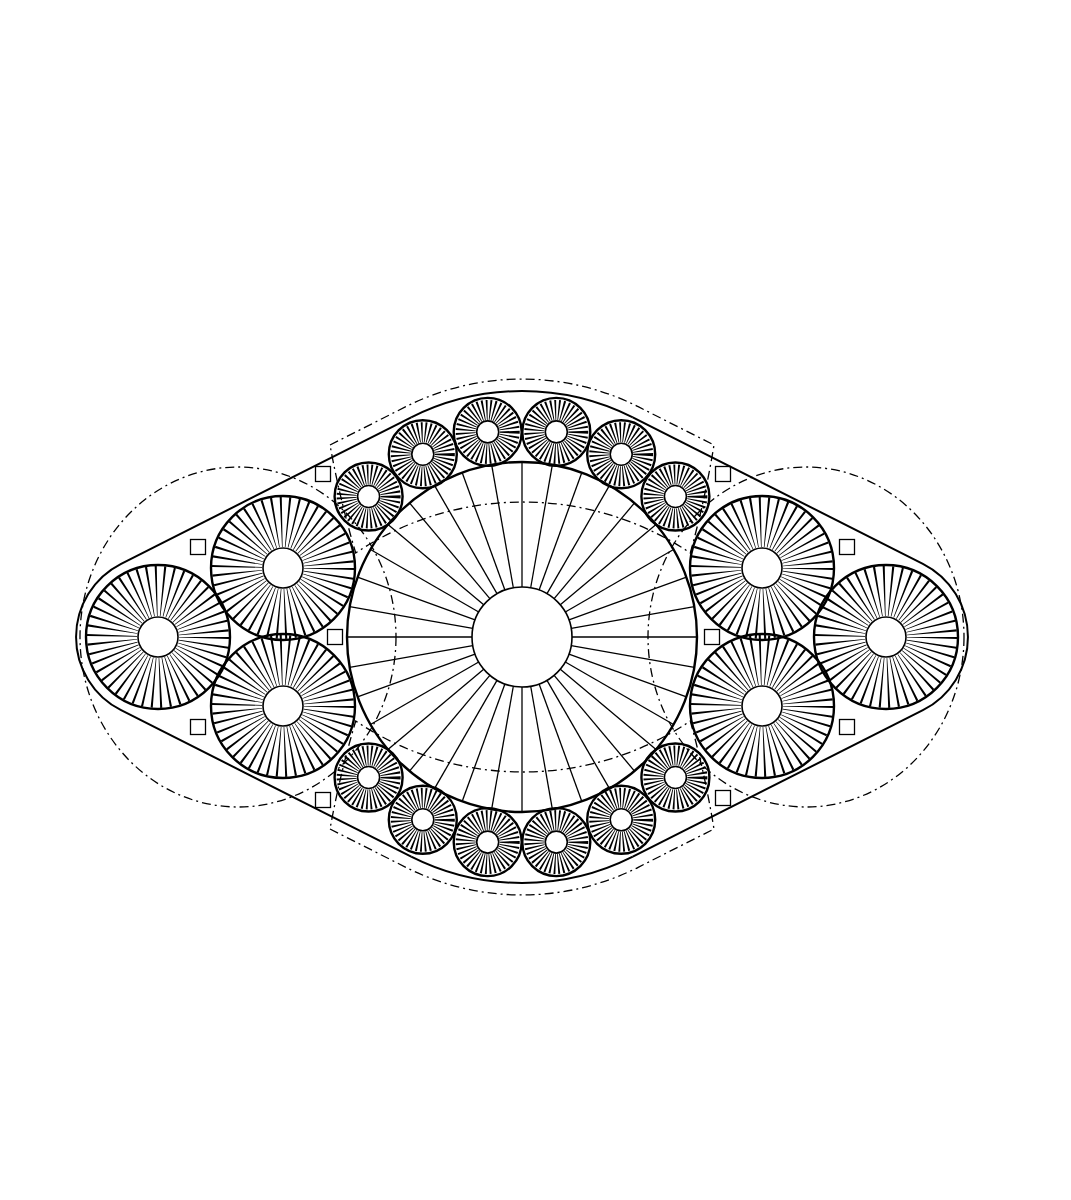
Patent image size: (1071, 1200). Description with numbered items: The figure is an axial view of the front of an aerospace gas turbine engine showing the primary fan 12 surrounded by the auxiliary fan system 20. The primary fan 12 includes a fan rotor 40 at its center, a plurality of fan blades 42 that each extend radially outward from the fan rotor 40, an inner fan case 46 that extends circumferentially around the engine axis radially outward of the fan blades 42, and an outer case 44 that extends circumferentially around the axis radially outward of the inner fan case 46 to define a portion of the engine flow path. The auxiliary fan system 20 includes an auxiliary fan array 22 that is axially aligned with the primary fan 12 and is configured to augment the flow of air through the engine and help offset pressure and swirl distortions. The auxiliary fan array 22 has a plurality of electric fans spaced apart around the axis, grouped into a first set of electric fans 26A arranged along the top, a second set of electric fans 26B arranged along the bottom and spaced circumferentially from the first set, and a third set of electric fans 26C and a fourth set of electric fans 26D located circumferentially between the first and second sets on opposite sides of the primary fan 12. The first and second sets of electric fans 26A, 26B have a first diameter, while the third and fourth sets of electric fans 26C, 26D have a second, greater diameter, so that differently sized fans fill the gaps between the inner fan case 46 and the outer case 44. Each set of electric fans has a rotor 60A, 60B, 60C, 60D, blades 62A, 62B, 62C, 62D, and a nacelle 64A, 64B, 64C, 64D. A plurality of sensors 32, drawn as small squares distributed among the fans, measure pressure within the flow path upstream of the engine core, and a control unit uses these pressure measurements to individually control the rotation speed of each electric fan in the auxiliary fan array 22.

The primary fan 12 is at (592, 503).
The auxiliary fan system 20 is at (258, 125).
The auxiliary fan array 22 is at (254, 227).
The first set of electric fans 26A is at (509, 389).
The second set of electric fans 26B is at (531, 883).
The third set of electric fans 26C is at (228, 579).
The fourth set of electric fans 26D is at (810, 592).
The sensors 32 is at (322, 465).
The fan rotor 40 is at (536, 651).
The fan blades 42 is at (662, 498).
The outer case 44 is at (648, 468).
The inner fan case 46 is at (775, 500).
The rotor 60A is at (440, 425).
The rotor 60B is at (532, 866).
The rotor 60C is at (152, 622).
The rotor 60D is at (892, 652).
The blades 62A is at (513, 394).
The blades 62B is at (593, 882).
The blades 62C is at (156, 555).
The blades 62D is at (935, 553).
The nacelle 64A is at (505, 420).
The nacelle 64B is at (640, 850).
The nacelle 64C is at (195, 752).
The nacelle 64D is at (866, 708).